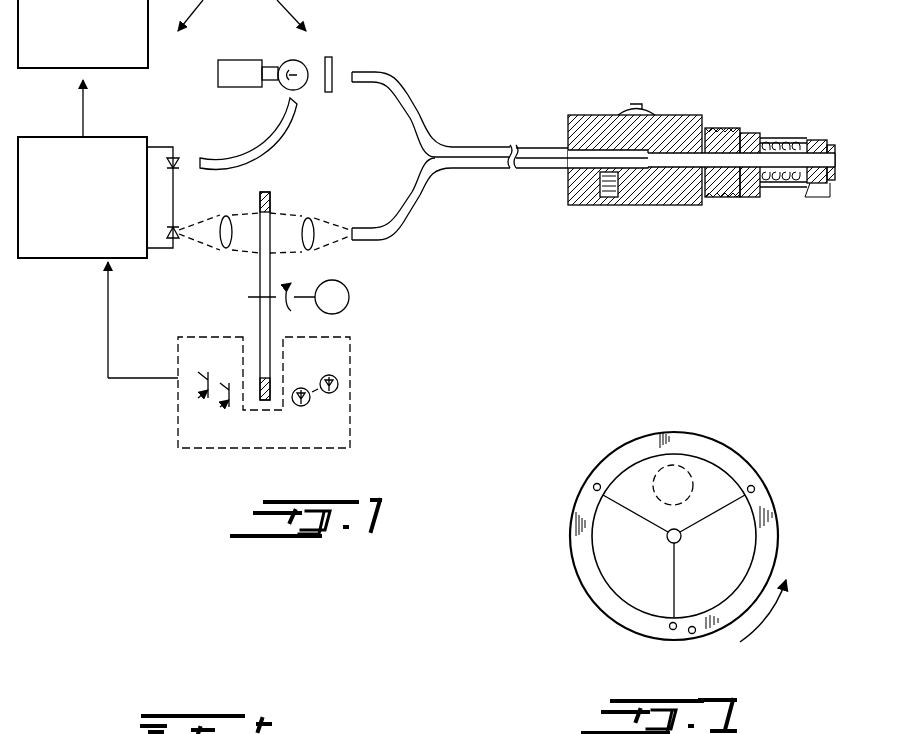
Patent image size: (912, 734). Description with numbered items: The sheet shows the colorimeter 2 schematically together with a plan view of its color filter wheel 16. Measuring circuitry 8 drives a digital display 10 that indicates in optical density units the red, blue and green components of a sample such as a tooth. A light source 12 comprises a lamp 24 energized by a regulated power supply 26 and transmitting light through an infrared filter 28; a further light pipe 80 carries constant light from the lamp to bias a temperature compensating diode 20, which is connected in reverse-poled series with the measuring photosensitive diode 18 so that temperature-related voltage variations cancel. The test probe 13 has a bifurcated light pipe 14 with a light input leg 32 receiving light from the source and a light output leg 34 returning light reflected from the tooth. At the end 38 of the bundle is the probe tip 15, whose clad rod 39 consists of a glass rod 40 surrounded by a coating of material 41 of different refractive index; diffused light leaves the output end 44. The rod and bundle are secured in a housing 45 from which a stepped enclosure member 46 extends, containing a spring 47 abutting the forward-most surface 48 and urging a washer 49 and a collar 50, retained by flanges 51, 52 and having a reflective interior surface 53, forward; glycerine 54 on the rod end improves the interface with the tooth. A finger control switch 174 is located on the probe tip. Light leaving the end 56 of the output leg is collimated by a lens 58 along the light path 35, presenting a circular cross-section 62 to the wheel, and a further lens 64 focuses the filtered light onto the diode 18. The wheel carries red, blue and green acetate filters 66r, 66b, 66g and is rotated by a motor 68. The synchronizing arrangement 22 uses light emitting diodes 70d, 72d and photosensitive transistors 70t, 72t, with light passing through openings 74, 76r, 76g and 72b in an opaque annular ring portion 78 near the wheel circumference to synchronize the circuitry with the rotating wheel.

In FIG. 1, the colorimeter 2 is at (434, 73).
In FIG. 1, the measuring circuitry 8 is at (145, 138).
In FIG. 1, the digital display 10 is at (143, 72).
In FIG. 1, the light source 12 is at (255, 58).
In FIG. 1, the test probe 13 is at (696, 151).
In FIG. 1, the bifurcated light pipe 14 is at (442, 150).
In FIG. 1, the probe tip 15 is at (722, 128).
In FIG. 1, the color filter wheel 16 is at (266, 191).
In FIG. 2, the color filter wheel 16 is at (590, 455).
In FIG. 1, the measuring photosensitive diode 18 is at (179, 228).
In FIG. 1, the temperature compensating diode 20 is at (180, 165).
In FIG. 1, the synchronizing arrangement 22 is at (351, 432).
In FIG. 1, the lamp 24 is at (287, 60).
In FIG. 1, the regulated power supply 26 is at (218, 72).
In FIG. 1, the infrared filter 28 is at (331, 56).
In FIG. 1, the light input leg 32 is at (378, 76).
In FIG. 1, the light output leg 34 is at (368, 228).
In FIG. 1, the light path 35 is at (287, 212).
In FIG. 1, the end of fiber optic bundle 38 is at (639, 165).
In FIG. 1, the clad rod 39 is at (687, 160).
In FIG. 1, the glass rod 40 is at (752, 167).
In FIG. 1, the coating of material 41 is at (770, 167).
In FIG. 1, the output end 44 is at (836, 161).
In FIG. 1, the housing 45 is at (592, 115).
In FIG. 1, the stepped enclosure member 46 is at (754, 133).
In FIG. 1, the spring 47 is at (784, 143).
In FIG. 1, the forward-most surface 48 is at (746, 133).
In FIG. 1, the washer 49 is at (803, 140).
In FIG. 1, the collar 50 is at (820, 146).
In FIG. 1, the flange 51 is at (810, 185).
In FIG. 1, the flange 52 is at (826, 185).
In FIG. 1, the reflective interior surface 53 is at (830, 153).
In FIG. 1, the glycerine 54 is at (830, 170).
In FIG. 1, the end of output leg 56 is at (348, 240).
In FIG. 1, the lens 58 is at (312, 246).
In FIG. 2, the circular cross-section 62 is at (690, 470).
In FIG. 1, the further lens 64 is at (222, 244).
In FIG. 2, the red acetate filter 66r is at (720, 478).
In FIG. 2, the blue acetate filter 66b is at (743, 547).
In FIG. 2, the green acetate filter 66g is at (608, 545).
In FIG. 1, the motor 68 is at (350, 297).
In FIG. 1, the photosensitive transistor 70t is at (223, 399).
In FIG. 1, the light emitting diode 70d is at (303, 407).
In FIG. 1, the photosensitive transistor 72t is at (201, 389).
In FIG. 1, the light emitting diode 72d is at (340, 381).
In FIG. 2, the blue index hole 72b is at (593, 488).
In FIG. 2, the rotation synchronizing opening 74 is at (692, 635).
In FIG. 2, the filter alignment synchronizing opening 76g is at (755, 489).
In FIG. 2, the filter alignment synchronizing opening 76r is at (670, 630).
In FIG. 2, the opaque annular ring portion 78 is at (605, 595).
In FIG. 1, the further light pipe 80 is at (287, 126).
In FIG. 1, the finger control switch 174 is at (645, 108).